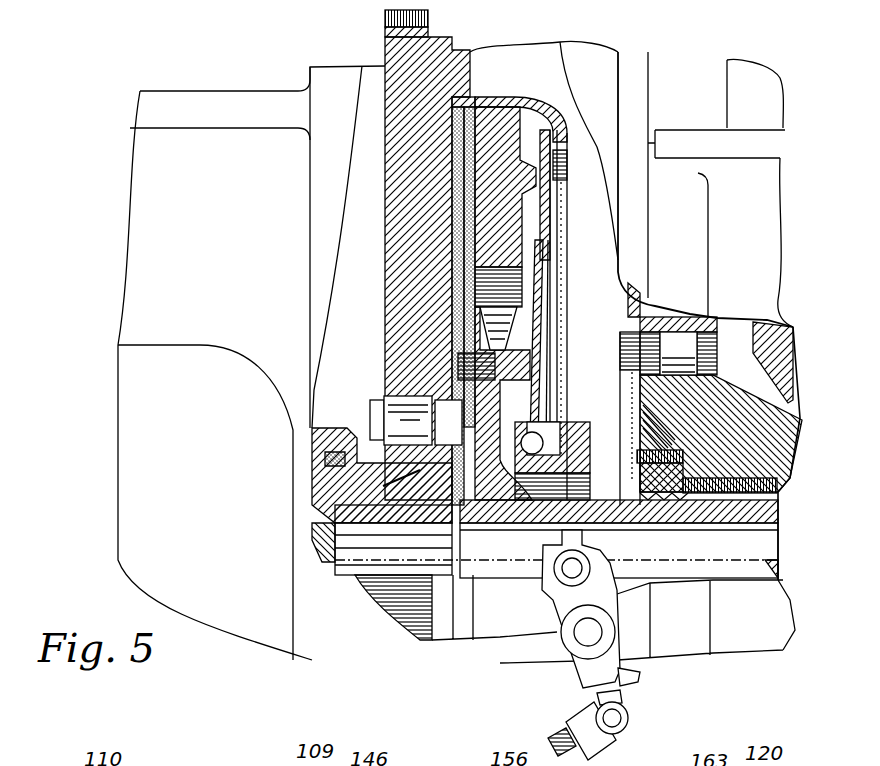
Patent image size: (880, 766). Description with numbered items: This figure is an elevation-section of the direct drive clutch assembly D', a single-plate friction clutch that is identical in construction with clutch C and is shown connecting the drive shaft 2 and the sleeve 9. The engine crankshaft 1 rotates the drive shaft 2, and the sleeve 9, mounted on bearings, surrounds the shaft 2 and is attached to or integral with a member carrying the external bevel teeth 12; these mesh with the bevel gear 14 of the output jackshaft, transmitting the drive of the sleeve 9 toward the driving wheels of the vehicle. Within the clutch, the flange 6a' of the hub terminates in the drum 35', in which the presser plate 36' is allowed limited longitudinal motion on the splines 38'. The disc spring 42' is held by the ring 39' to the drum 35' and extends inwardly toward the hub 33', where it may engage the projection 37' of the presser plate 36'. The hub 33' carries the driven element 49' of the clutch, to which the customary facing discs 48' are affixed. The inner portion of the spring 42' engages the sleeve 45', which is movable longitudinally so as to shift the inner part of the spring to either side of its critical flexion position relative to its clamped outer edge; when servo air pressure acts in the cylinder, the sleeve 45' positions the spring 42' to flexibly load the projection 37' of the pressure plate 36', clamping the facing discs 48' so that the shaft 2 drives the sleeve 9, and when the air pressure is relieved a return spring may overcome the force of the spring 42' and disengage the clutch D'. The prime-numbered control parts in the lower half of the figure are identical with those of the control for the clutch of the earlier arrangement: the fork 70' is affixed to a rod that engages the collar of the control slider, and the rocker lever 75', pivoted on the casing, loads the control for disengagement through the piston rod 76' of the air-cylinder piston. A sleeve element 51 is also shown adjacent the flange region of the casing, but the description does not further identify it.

The friction clutch D' is at (406, 255).
The flange 6a' is at (406, 268).
The facing discs 48' is at (405, 306).
The driven element 49' is at (413, 267).
The splines 38' is at (480, 79).
The drum 35' is at (521, 79).
The presser plate 36' is at (504, 280).
The ring 39' is at (568, 160).
The projection 37' is at (564, 292).
The disc spring 42' is at (567, 347).
The sleeve 45' is at (559, 455).
The engine crankshaft 1 is at (327, 487).
The sleeve 51 is at (387, 537).
The hub 33' is at (431, 517).
The sleeve 9 is at (753, 507).
The drive shaft 2 is at (752, 538).
The bevel gear 14 is at (778, 343).
The external bevel teeth 12 is at (740, 387).
The fork 70' is at (599, 609).
The rocker lever 75' is at (632, 684).
The piston rod 76' is at (580, 726).